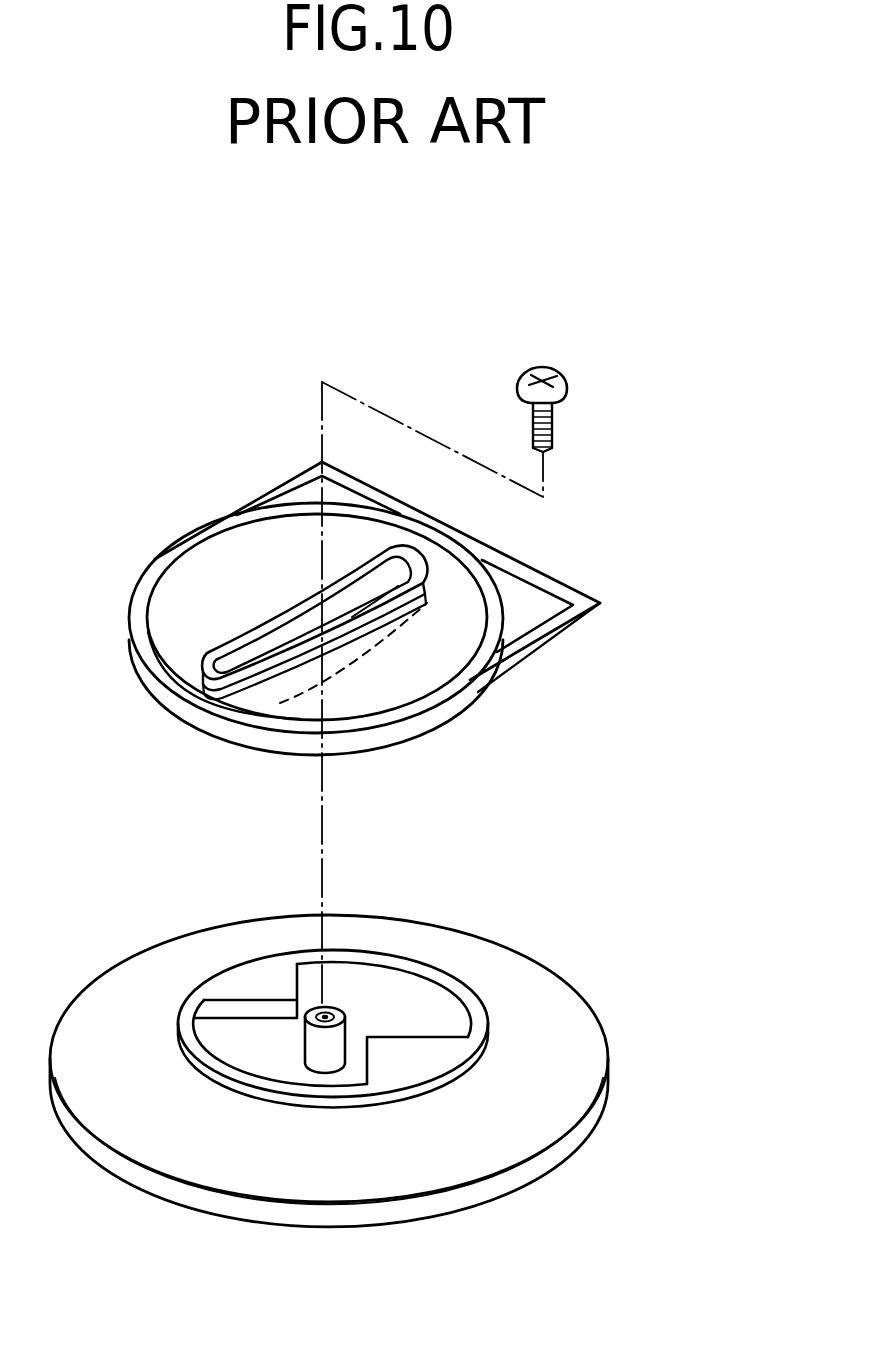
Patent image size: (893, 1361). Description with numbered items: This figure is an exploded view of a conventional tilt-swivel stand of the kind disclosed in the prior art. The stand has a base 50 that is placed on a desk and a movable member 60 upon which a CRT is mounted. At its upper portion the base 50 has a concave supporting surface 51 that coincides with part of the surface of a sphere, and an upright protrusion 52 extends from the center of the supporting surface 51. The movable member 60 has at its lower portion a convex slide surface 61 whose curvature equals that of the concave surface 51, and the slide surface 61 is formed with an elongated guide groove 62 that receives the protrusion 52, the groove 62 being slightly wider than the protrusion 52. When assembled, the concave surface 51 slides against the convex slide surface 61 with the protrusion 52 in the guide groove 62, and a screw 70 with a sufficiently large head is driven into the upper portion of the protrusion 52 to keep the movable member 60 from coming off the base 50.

The base 50 is at (566, 1033).
The concave supporting surface 51 is at (258, 982).
The upright protrusion 52 is at (317, 1053).
The movable member 60 is at (338, 605).
The convex slide surface 61 is at (387, 737).
The elongated guide groove 62 is at (284, 645).
The screw 70 is at (567, 385).